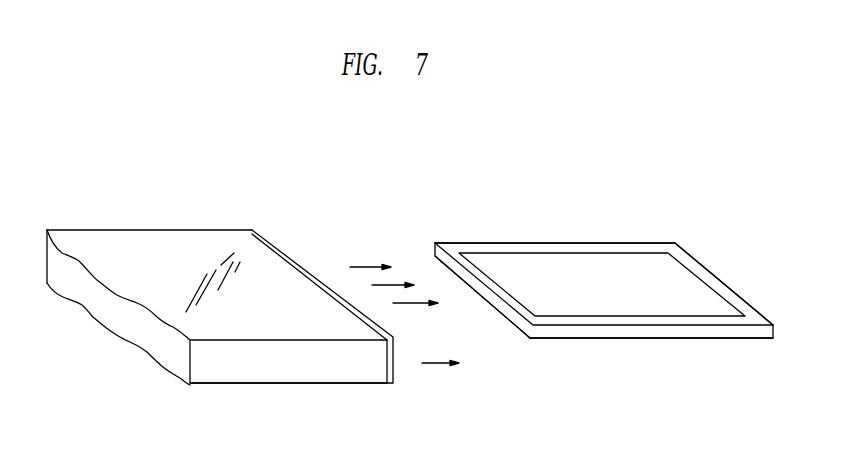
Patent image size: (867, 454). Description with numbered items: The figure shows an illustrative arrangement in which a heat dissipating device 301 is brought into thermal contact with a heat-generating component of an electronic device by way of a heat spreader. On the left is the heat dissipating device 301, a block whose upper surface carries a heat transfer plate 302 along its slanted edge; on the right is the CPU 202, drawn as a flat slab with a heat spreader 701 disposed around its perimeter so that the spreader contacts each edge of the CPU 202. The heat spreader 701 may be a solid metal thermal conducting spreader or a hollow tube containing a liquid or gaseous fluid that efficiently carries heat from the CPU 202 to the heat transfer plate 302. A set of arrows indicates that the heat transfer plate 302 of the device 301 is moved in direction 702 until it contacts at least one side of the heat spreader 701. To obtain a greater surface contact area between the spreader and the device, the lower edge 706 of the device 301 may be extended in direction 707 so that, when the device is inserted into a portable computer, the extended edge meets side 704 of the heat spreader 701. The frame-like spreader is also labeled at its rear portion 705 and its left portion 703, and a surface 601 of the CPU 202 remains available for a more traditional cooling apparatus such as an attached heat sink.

The heat dissipating device 301 is at (145, 184).
The heat transfer plate 302 is at (257, 231).
The direction 702 is at (360, 267).
The rear edge of frame 705 is at (560, 249).
The CPU 202 is at (647, 246).
The surface 601 is at (709, 291).
The heat spreader 701 is at (578, 317).
The left edge of frame 703 is at (521, 333).
The side 704 is at (698, 335).
The edge 706 is at (292, 383).
The direction 707 is at (446, 364).